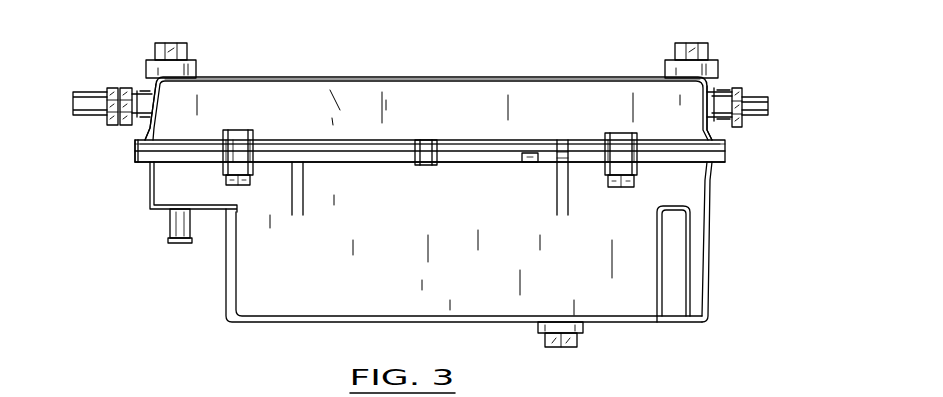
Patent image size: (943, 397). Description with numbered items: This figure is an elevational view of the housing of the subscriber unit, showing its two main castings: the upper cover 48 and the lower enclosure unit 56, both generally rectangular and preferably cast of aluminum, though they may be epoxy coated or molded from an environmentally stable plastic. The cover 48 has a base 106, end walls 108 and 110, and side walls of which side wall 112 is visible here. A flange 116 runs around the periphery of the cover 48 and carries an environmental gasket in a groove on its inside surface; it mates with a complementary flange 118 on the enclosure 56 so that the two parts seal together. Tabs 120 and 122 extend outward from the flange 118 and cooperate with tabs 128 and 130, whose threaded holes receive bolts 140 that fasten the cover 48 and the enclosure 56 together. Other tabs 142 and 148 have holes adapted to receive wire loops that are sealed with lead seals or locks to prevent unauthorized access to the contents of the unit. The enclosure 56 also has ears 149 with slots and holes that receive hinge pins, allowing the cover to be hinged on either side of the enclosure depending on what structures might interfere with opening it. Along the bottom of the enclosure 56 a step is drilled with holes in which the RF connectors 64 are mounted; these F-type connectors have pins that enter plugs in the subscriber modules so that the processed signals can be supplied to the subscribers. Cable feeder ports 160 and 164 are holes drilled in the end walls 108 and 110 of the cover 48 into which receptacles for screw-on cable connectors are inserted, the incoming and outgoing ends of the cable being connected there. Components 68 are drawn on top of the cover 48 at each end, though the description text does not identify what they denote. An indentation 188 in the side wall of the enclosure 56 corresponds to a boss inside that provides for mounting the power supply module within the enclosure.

The cover 48 is at (277, 77).
The enclosure unit 56 is at (297, 312).
The RF connector 64 is at (178, 247).
The electrical connector 68 is at (197, 62).
The base 106 is at (435, 77).
The end wall 108 is at (147, 128).
The end wall 110 is at (717, 130).
The side wall 112 is at (333, 92).
The flange 116 is at (137, 148).
The complementary flange 118 is at (137, 160).
The tab 120 is at (230, 168).
The tab 122 is at (637, 172).
The tab 128 is at (243, 130).
The tab 130 is at (617, 133).
The bolt 140 is at (233, 183).
The tab 142 is at (425, 138).
The tab 148 is at (428, 163).
The ear 149 is at (306, 195).
The cable feeder port 160 is at (98, 93).
The cable feeder port 164 is at (757, 118).
The indentation 188 is at (672, 313).